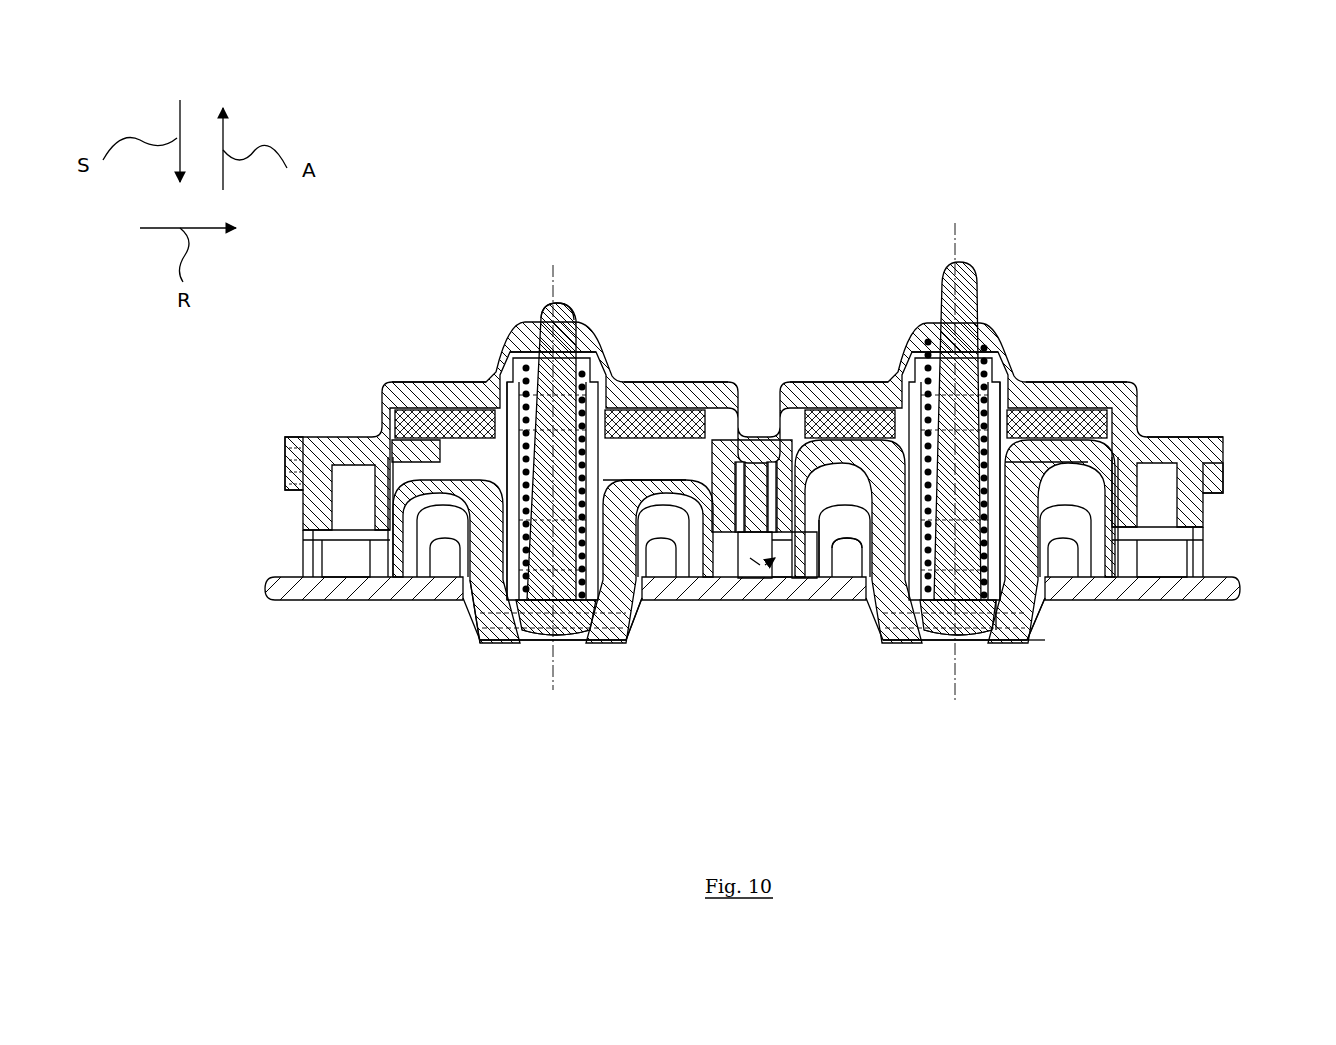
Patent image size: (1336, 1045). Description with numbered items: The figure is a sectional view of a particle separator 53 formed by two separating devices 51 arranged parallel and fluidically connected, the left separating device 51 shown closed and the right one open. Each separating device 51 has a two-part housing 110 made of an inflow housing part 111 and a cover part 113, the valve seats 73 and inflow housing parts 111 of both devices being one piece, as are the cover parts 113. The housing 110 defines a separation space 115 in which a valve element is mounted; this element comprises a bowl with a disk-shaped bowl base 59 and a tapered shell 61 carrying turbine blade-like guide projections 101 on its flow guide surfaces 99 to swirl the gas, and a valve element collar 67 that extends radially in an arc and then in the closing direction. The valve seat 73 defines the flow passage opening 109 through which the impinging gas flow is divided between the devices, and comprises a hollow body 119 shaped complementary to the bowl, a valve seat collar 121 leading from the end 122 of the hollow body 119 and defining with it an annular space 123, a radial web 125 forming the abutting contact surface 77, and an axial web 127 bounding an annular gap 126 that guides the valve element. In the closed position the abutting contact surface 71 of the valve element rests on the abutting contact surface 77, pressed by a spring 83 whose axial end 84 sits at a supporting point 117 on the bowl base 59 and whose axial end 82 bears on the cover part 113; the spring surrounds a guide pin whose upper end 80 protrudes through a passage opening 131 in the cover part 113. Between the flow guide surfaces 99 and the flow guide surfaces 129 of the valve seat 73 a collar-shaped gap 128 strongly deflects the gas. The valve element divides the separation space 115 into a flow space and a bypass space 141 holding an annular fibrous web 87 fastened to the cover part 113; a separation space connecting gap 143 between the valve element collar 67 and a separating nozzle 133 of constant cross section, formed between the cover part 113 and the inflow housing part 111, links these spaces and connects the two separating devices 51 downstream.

The separating device 51 is at (730, 244).
The particle separator 53 is at (1100, 190).
The bowl base 59 is at (507, 640).
The shell 61 is at (303, 505).
The valve element collar 67 is at (285, 470).
The abutting contact surface of the valve element 71 is at (1080, 532).
The valve seat 73 is at (637, 613).
The abutting contact surface of the valve seat 77 is at (1160, 597).
The upper end of the guide pin 80 is at (567, 310).
The axial end of the spring 82 is at (578, 367).
The spring 83 is at (617, 358).
The axial end of the spring 84 is at (540, 630).
The fibrous web 87 is at (450, 397).
The flow guide surfaces of the valve element 99 is at (455, 600).
The turbine blade-like guide projection 101 is at (800, 450).
The flow passage opening 109 is at (566, 690).
The housing 110 is at (409, 374).
The inflow housing part 111 is at (773, 580).
The cover part 113 is at (667, 383).
The separation space 115 is at (652, 466).
The supporting point 117 is at (592, 636).
The hollow body 119 is at (1040, 623).
The valve seat collar 121 is at (847, 580).
The end of the hollow body 122 is at (400, 492).
The annular space 123 is at (460, 595).
The radial web 125 is at (425, 592).
The annular gap 126 is at (858, 578).
The axial web 127 is at (300, 600).
The collar-shaped gap 128 is at (672, 455).
The flow guide surfaces of the valve seat 129 is at (1023, 597).
The passage opening 131 is at (540, 313).
The separating nozzle 133 is at (750, 578).
The bypass space 141 is at (497, 400).
The separation space connecting gap 143 is at (742, 462).